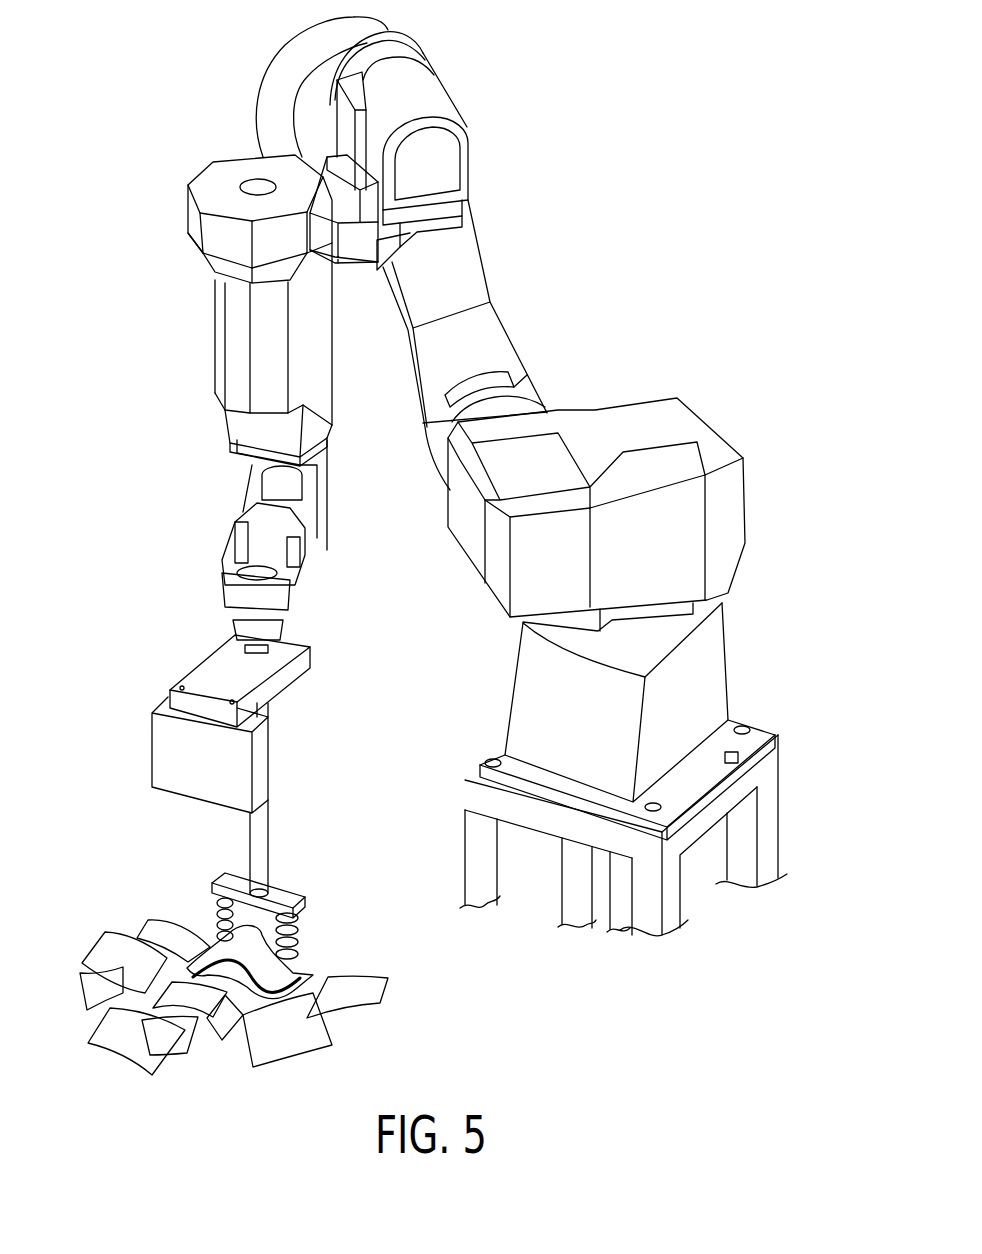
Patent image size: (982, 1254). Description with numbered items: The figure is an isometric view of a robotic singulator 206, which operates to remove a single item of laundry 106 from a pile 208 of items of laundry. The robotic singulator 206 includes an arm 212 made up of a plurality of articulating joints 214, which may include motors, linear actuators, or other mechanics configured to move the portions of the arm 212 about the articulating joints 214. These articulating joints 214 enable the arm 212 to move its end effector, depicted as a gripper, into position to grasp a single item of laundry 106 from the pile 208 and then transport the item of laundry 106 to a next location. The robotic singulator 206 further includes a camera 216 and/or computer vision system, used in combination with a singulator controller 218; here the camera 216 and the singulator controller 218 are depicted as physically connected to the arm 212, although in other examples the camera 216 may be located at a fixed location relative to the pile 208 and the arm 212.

The item of laundry 106 is at (285, 975).
The robotic singulator 206 is at (688, 306).
The pile 208 is at (128, 912).
The arm 212 is at (205, 377).
The articulating joints 214 is at (180, 195).
The camera 216 is at (150, 738).
The singulator controller 218 is at (725, 670).